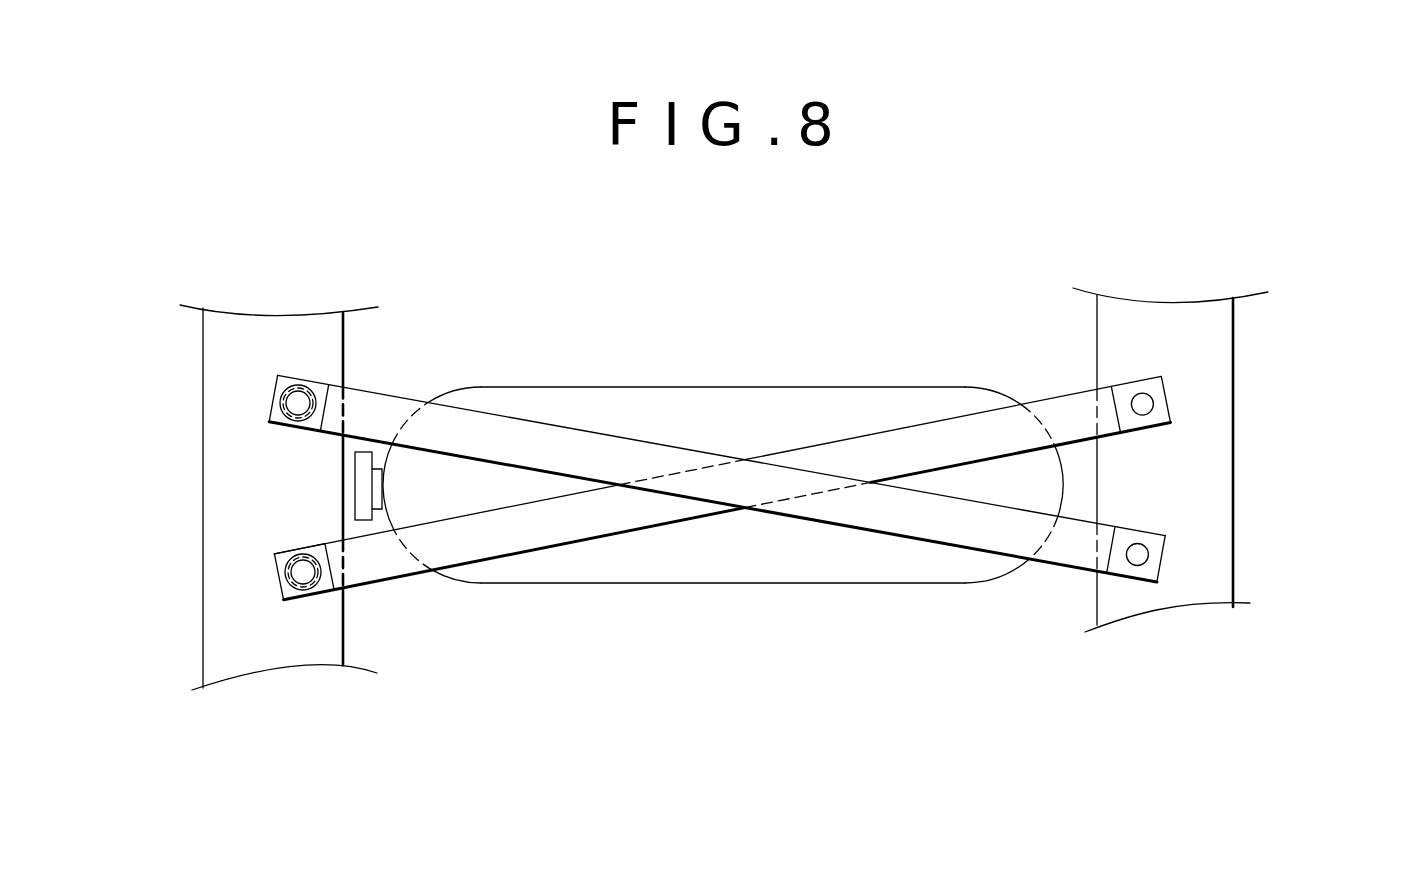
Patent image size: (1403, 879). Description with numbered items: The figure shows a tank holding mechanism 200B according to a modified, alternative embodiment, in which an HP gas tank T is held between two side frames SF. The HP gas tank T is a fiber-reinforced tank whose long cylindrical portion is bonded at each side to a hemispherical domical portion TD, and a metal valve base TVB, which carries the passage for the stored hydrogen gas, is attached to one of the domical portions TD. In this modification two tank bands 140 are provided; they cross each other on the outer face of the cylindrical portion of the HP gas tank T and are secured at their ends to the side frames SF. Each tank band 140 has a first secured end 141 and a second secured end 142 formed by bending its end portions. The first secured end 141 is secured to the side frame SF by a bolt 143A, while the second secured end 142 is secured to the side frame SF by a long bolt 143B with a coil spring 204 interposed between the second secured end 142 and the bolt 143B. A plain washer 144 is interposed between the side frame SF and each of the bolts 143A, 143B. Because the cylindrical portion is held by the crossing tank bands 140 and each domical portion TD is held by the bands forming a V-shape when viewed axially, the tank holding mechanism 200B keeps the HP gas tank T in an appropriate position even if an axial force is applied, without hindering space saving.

The tank holding mechanism 200B is at (497, 270).
The coil spring 204 is at (312, 388).
The plain washer 144 is at (298, 403).
The tank band 140 is at (453, 543).
The long bolt 143B is at (298, 405).
The bolt 143A is at (1138, 560).
The second secured end 142 is at (320, 547).
The first secured end 141 is at (1140, 557).
The side frame SF is at (217, 363).
The HP gas tank T is at (650, 550).
The domical portion TD is at (408, 513).
The valve base TVB is at (366, 522).